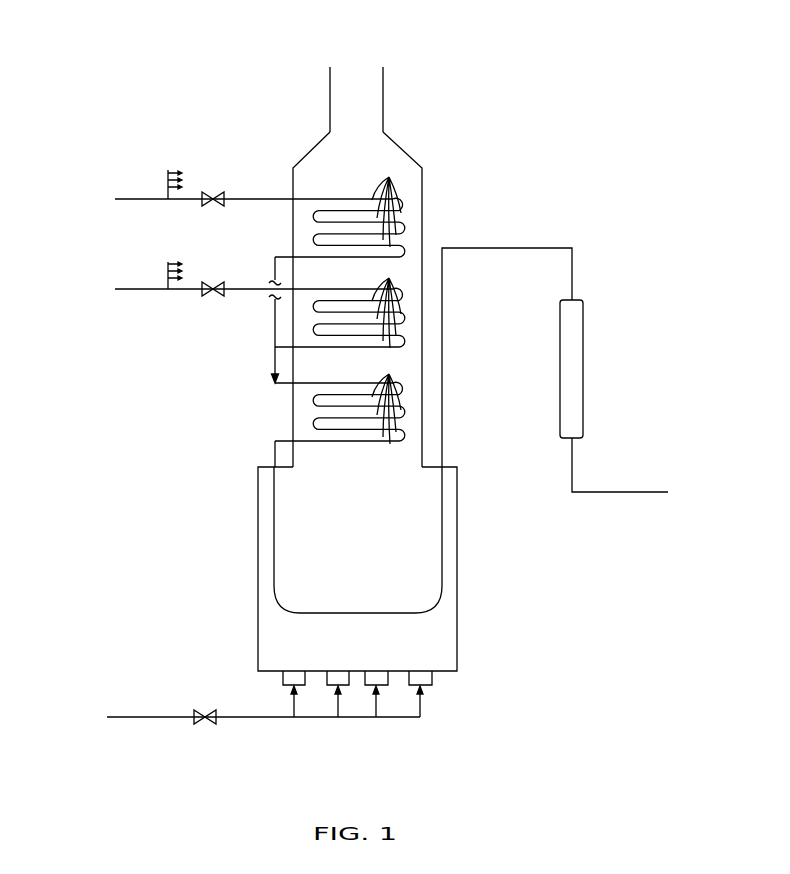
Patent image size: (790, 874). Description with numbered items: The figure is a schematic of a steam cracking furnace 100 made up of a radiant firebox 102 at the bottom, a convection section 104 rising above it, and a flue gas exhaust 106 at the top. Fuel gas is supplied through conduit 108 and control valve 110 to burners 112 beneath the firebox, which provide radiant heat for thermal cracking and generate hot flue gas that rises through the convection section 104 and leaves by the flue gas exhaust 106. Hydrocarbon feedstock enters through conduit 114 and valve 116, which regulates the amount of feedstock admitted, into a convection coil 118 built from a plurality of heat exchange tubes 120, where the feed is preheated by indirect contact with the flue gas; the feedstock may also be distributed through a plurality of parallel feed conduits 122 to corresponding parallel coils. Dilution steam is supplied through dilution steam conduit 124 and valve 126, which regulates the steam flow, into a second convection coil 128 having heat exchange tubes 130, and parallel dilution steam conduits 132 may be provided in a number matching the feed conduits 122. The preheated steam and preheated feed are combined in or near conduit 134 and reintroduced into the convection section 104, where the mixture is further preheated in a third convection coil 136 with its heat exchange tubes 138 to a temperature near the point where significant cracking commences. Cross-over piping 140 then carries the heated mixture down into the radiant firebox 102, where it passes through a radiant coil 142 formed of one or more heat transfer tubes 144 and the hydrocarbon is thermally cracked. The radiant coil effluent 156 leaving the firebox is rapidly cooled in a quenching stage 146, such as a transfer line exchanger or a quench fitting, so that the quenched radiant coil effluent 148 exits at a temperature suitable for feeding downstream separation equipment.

The steam cracking furnace 100 is at (480, 130).
The radiant firebox 102 is at (258, 647).
The convection section 104 is at (293, 168).
The flue gas exhaust 106 is at (330, 95).
The conduit 108 is at (130, 717).
The control valve 110 is at (205, 710).
The burners 112 is at (434, 683).
The conduit 114 is at (132, 199).
The valve 116 is at (213, 191).
The convection coil 118 is at (363, 197).
The heat exchange tubes 120 is at (384, 201).
The parallel feed conduits 122 is at (168, 170).
The dilution steam conduit 124 is at (132, 289).
The valve 126 is at (213, 281).
The convection coil 128 is at (350, 288).
The heat exchange tubes 130 is at (384, 303).
The parallel dilution steam conduits 132 is at (168, 262).
The conduit 134 is at (270, 375).
The convection coil 136 is at (350, 383).
The heat exchange tubes 138 is at (385, 398).
The cross-over piping 140 is at (275, 443).
The radiant coil 142 is at (302, 560).
The heat transfer tubes 144 is at (388, 612).
The quenching stage 146 is at (583, 368).
The quenched radiant coil effluent 148 is at (635, 492).
The radiant coil effluent 156 is at (515, 248).